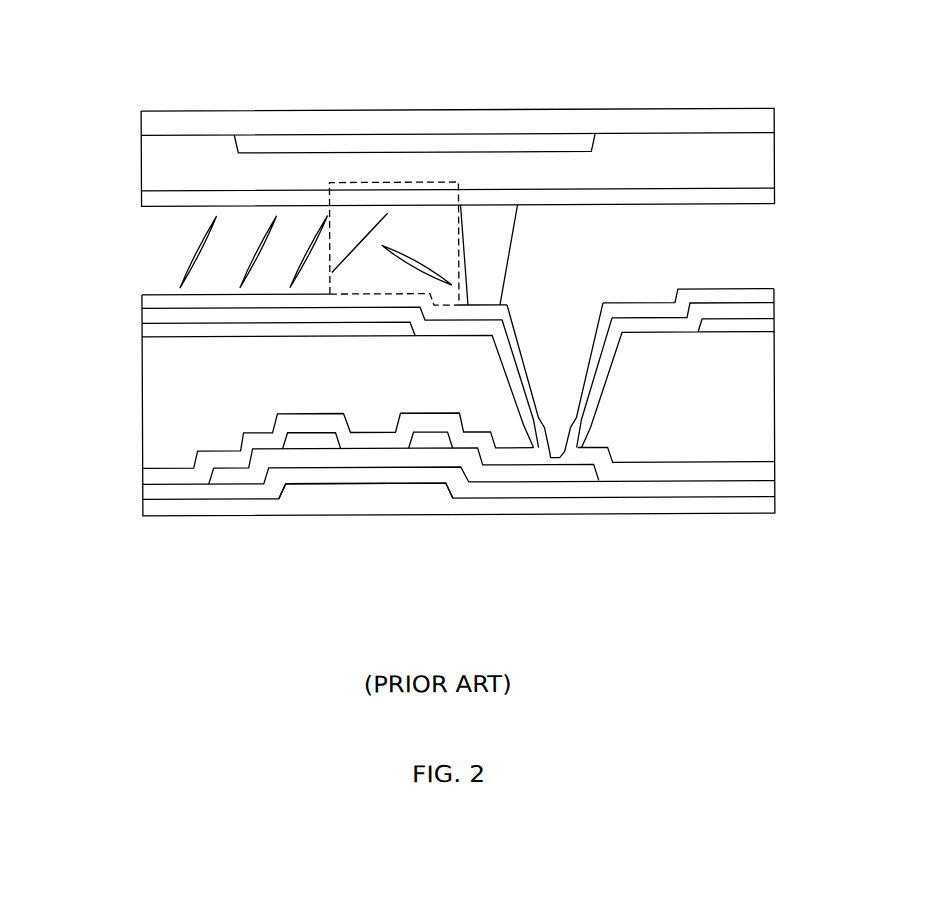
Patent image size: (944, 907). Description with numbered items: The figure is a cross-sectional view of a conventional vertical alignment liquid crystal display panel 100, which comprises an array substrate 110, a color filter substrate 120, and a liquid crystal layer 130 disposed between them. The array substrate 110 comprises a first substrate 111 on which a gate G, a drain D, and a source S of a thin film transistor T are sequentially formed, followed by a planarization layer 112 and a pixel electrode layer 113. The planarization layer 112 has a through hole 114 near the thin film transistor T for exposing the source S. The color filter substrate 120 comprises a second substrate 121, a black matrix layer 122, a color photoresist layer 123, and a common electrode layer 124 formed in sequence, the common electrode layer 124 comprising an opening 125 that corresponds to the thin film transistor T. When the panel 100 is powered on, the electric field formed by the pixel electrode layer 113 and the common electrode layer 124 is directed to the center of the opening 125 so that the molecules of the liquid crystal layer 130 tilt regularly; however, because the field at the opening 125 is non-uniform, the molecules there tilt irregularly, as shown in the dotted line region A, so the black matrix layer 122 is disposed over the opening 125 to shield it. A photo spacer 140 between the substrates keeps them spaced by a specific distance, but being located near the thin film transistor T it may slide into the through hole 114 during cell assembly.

The vertical alignment liquid crystal display panel 100 is at (88, 41).
The array substrate 110 is at (110, 300).
The first substrate 111 is at (718, 514).
The planarization layer 112 is at (765, 430).
The pixel electrode layer 113 is at (753, 290).
The through hole 114 is at (552, 335).
The color filter substrate 120 is at (109, 113).
The second substrate 121 is at (724, 110).
The black matrix layer 122 is at (460, 135).
The color photoresist layer 123 is at (775, 156).
The common electrode layer 124 is at (757, 205).
The opening 125 is at (392, 198).
The liquid crystal layer 130 is at (109, 217).
The photo spacer 140 is at (510, 248).
The dotted line region A is at (420, 182).
The drain D is at (303, 440).
The gate G is at (380, 493).
The source S is at (444, 499).
The thin film transistor T is at (379, 523).